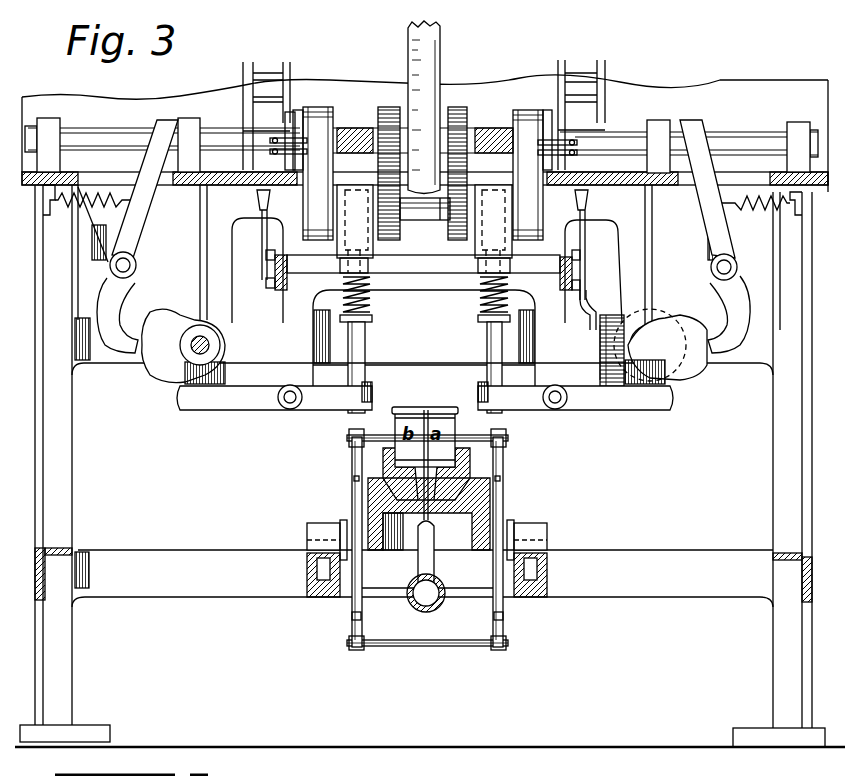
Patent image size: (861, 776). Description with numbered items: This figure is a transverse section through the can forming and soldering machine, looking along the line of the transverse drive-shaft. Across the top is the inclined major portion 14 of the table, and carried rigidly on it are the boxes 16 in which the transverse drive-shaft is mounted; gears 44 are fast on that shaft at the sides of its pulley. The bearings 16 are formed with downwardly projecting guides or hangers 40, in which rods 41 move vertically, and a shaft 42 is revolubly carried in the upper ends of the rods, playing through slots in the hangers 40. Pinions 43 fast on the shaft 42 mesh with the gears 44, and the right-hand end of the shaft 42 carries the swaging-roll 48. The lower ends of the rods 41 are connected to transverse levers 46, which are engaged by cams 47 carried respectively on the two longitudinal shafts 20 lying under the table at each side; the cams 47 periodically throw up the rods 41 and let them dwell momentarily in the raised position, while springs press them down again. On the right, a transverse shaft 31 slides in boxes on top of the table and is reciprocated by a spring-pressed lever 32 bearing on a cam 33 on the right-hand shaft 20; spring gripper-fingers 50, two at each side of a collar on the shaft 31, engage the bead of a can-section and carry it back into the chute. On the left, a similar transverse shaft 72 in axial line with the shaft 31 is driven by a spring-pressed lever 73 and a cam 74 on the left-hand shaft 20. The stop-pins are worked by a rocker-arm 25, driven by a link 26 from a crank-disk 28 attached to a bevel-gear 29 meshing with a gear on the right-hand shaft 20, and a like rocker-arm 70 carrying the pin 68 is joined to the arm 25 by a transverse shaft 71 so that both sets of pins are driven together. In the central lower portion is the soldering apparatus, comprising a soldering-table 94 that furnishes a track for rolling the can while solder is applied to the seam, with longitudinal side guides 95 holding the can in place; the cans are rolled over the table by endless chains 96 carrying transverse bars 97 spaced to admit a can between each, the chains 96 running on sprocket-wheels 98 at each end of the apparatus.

The inclined major portion of the table 14 is at (425, 139).
The boxes 16 is at (342, 122).
The longitudinal shafts 20 is at (212, 345).
The rocker-arm 25 is at (580, 263).
The link 26 is at (592, 312).
The crank-disk 28 is at (607, 388).
The bevel-gear 29 is at (614, 384).
The transverse shaft 31 is at (730, 138).
The spring-pressed lever 32 is at (730, 293).
The cam 33 is at (688, 373).
The guides or hangers 40 is at (345, 255).
The rods 41 is at (350, 356).
The shaft 42 is at (418, 214).
The pinions 43 is at (416, 222).
The gears 44 is at (386, 110).
The levers 46 is at (330, 393).
The cams 47 is at (200, 385).
The swaging-roll 48 is at (444, 214).
The spring gripper-fingers 50 is at (552, 142).
The pin 68 is at (262, 230).
The rocker-arm 70 is at (272, 282).
The transverse shaft 71 is at (424, 274).
The transverse shaft 72 is at (108, 132).
The spring-pressed lever 73 is at (115, 297).
The cam 74 is at (158, 350).
The soldering-table 94 is at (470, 488).
The longitudinal side guides 95 is at (390, 460).
The endless chains 96 is at (508, 438).
The transverse bars 97 is at (486, 438).
The sprocket-wheels 98 is at (362, 618).